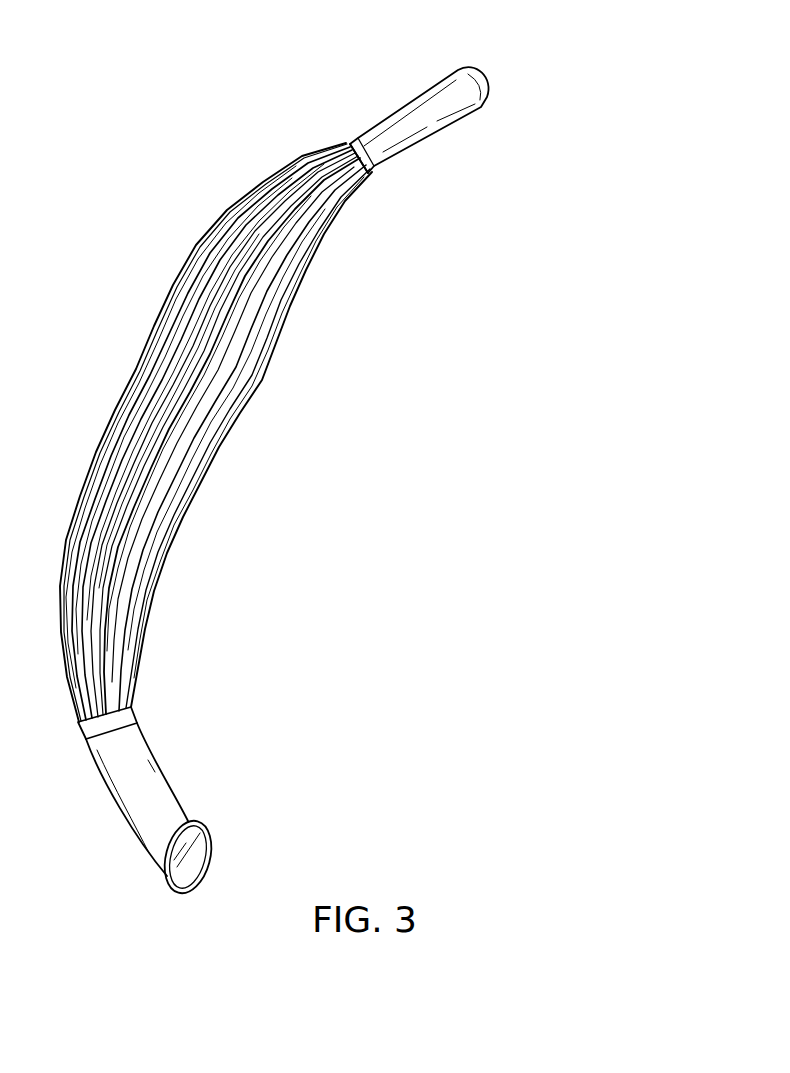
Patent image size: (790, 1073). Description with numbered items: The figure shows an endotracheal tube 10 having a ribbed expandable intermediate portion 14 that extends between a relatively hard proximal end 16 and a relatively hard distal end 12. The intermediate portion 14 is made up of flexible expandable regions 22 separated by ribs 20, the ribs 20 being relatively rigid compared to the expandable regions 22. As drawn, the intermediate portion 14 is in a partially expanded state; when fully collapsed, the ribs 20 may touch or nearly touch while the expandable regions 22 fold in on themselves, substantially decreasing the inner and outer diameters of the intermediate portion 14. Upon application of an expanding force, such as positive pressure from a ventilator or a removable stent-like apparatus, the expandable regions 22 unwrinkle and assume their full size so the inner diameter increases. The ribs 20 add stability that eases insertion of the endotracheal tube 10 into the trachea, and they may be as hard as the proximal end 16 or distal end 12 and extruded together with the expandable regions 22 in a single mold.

The endotracheal tube 10 is at (180, 84).
The distal end 12 is at (103, 788).
The intermediate portion 14 is at (98, 473).
The proximal end 16 is at (395, 105).
The ribs 20 is at (164, 300).
The expandable regions 22 is at (225, 250).